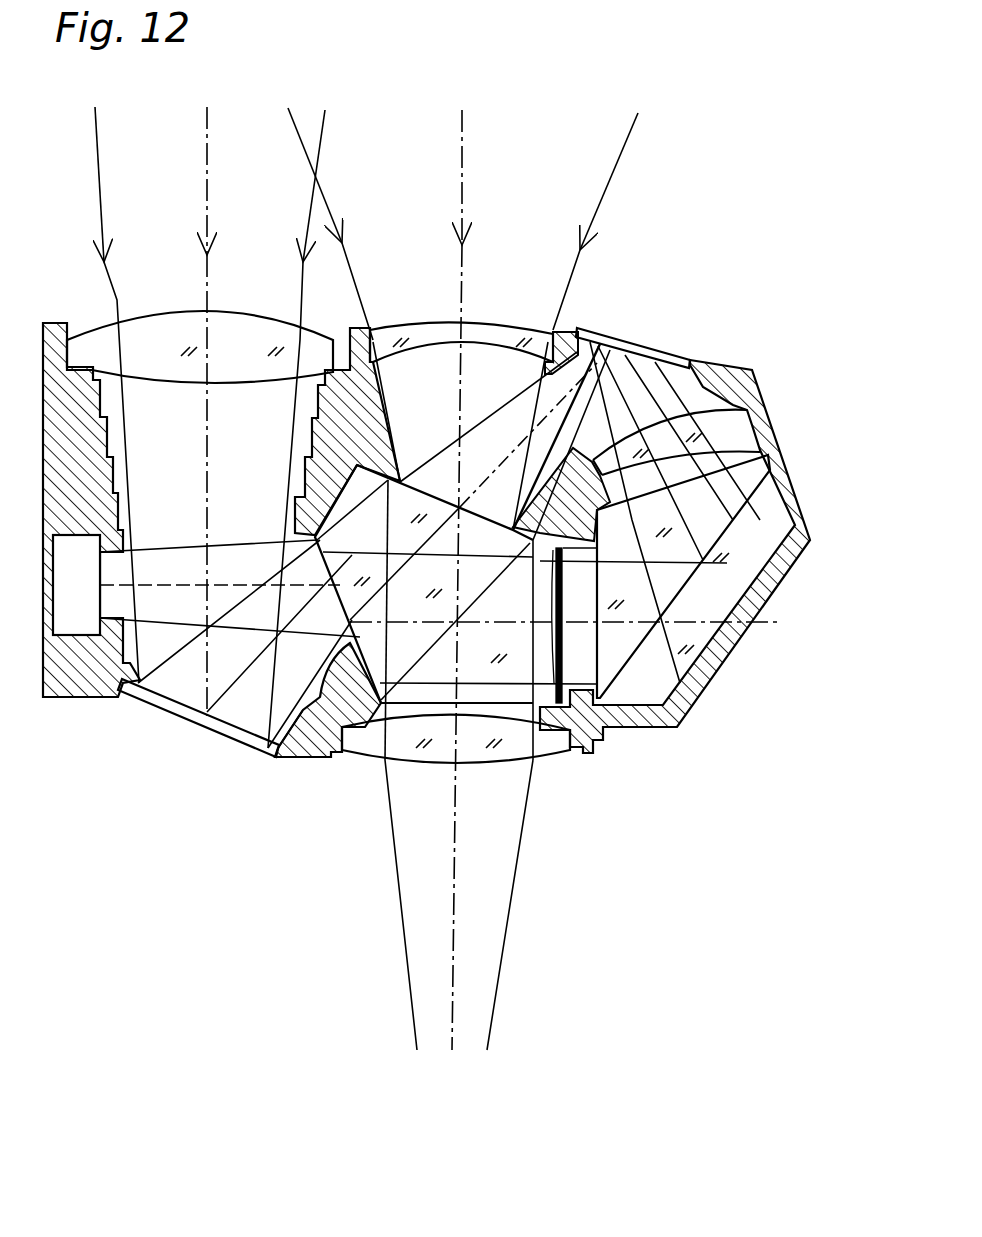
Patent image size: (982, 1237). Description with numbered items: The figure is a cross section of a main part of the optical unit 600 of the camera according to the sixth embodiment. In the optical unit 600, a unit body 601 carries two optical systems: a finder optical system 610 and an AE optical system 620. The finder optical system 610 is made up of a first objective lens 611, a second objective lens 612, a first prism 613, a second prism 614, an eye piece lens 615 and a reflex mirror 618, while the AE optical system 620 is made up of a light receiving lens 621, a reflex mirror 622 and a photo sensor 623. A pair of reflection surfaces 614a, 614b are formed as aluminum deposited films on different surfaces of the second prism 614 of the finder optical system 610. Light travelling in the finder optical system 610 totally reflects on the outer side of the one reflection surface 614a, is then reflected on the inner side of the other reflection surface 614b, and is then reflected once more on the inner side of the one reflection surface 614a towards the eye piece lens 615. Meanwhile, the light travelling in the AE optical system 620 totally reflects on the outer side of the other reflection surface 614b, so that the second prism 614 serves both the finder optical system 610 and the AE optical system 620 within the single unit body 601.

The optical unit 600 is at (655, 847).
The unit body 601 is at (722, 667).
The finder optical system 610 is at (543, 195).
The first objective lens 611 is at (500, 337).
The second objective lens 612 is at (747, 412).
The first prism 613 is at (770, 523).
The second prism 614 is at (507, 692).
The reflection surface 614a is at (427, 490).
The reflection surface 614b is at (297, 758).
The eye piece lens 615 is at (360, 735).
The reflex mirror 618 is at (650, 343).
The AE optical system 620 is at (252, 260).
The light receiving lens 621 is at (170, 330).
The reflex mirror 622 is at (203, 720).
The photo sensor 623 is at (72, 618).